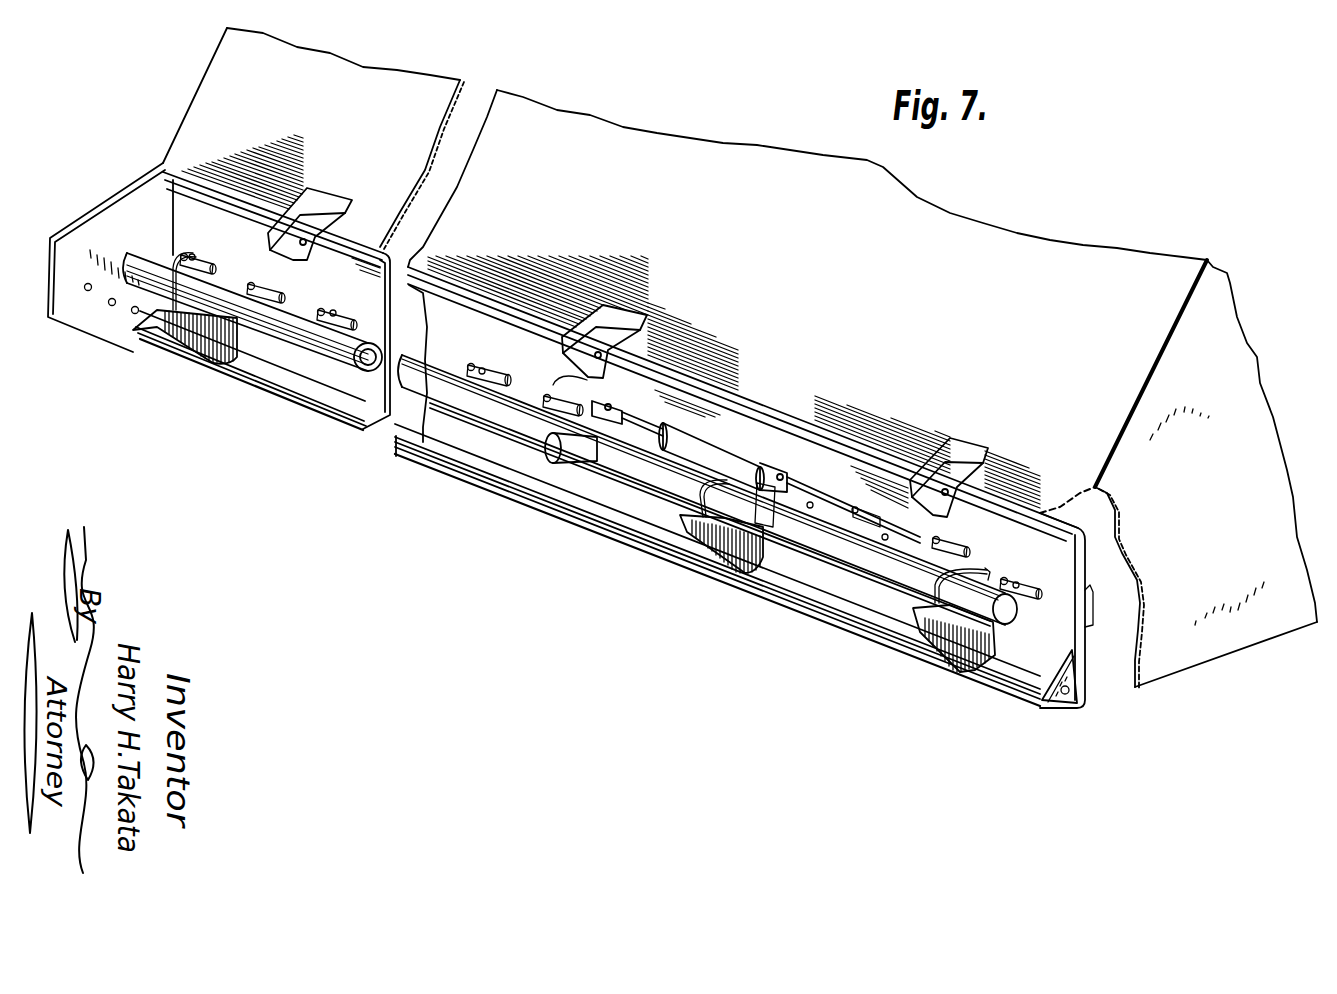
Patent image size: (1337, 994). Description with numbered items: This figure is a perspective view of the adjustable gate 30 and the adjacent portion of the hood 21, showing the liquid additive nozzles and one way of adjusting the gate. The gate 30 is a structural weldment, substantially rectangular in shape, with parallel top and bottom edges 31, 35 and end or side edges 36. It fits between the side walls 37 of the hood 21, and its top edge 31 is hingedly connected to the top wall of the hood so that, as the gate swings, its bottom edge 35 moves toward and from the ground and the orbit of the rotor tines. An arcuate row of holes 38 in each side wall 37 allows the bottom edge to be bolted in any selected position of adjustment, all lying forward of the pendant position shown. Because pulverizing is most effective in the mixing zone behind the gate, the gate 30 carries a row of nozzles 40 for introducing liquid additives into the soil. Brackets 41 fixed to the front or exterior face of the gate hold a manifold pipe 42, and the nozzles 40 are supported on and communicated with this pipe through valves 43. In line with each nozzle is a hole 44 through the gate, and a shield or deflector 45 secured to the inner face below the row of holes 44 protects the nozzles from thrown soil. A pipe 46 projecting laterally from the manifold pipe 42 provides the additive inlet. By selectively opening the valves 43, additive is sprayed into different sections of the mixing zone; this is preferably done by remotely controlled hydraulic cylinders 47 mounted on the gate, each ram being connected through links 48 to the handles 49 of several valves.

The hood 21 is at (927, 223).
The adjustable gate 30 is at (840, 580).
The top edge 31 is at (1003, 497).
The bottom edge 35 is at (1077, 707).
The end or side edges 36 is at (173, 218).
The side walls 37 is at (127, 200).
The arcuate row of holes 38 is at (88, 291).
The nozzles 40 is at (245, 283).
The brackets 41 is at (210, 350).
The manifold pipe 42 is at (653, 477).
The valves 43 is at (192, 253).
The holes 44 is at (217, 248).
The shield or deflector 45 is at (1093, 602).
The inlet pipe 46 is at (543, 457).
The hydraulic cylinders 47 is at (718, 443).
The links 48 is at (823, 500).
The handles 49 is at (847, 507).